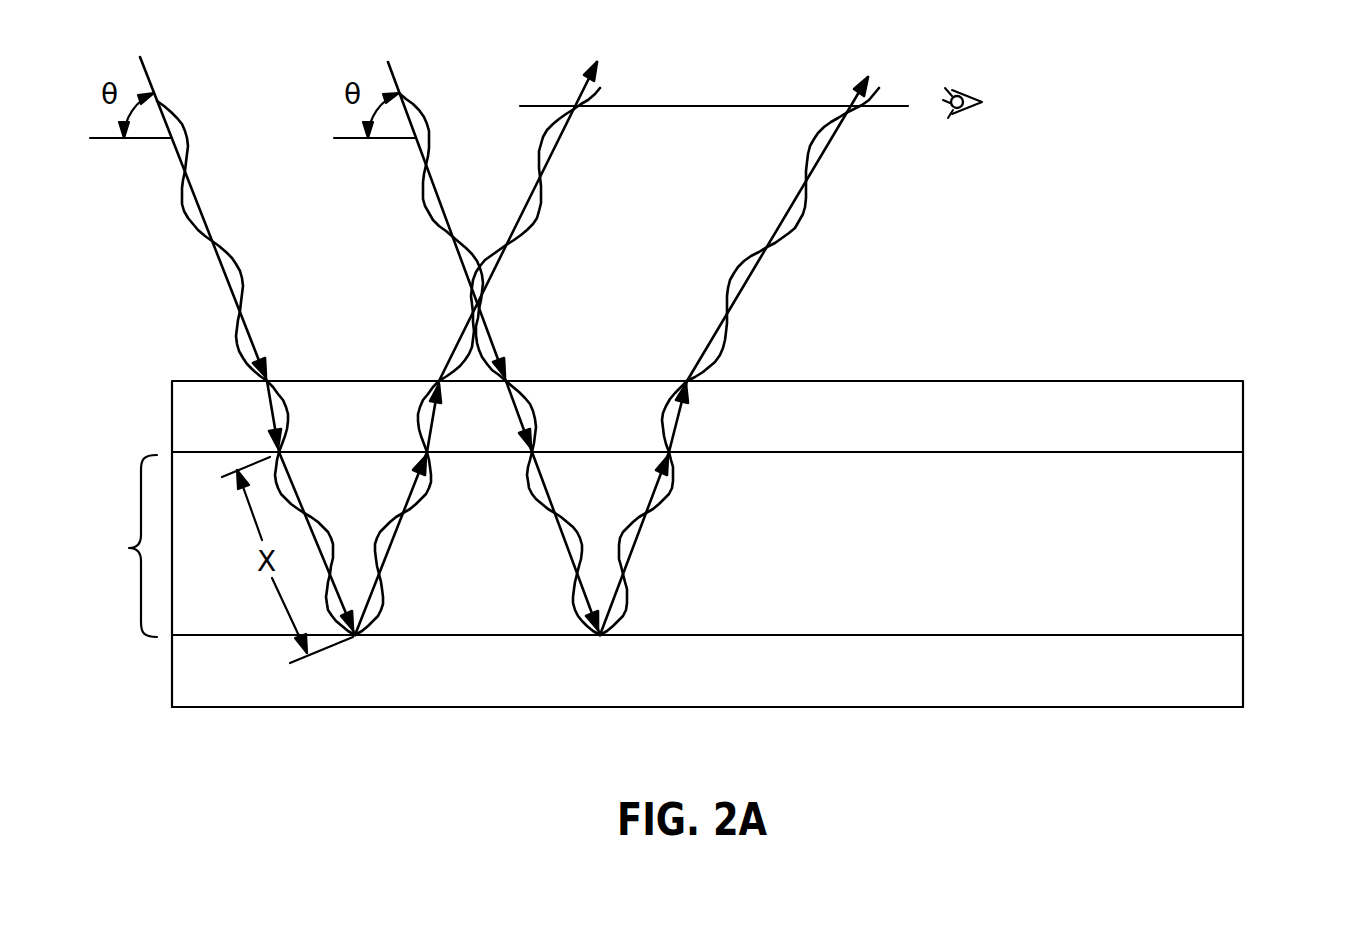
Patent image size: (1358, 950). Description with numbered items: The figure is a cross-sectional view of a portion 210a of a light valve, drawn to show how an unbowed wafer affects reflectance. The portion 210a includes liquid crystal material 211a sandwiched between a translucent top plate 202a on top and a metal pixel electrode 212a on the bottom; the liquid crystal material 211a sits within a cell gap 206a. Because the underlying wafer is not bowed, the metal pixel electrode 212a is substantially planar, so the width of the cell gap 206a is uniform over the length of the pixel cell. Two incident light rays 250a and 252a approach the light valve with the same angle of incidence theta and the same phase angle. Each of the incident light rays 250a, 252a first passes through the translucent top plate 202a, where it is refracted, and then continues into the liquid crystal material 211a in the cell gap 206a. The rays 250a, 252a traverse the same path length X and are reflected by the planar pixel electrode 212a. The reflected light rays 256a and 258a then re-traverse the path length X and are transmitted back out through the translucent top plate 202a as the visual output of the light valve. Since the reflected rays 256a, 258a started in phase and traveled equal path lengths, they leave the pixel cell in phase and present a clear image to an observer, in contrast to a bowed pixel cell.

The portion of a light valve 210a is at (1068, 311).
The translucent top plate 202a is at (1225, 426).
The liquid crystal material 211a is at (1225, 550).
The metal pixel electrode 212a is at (1225, 683).
The cell gap 206a is at (111, 546).
The incident light ray 250a is at (150, 76).
The incident light ray 252a is at (396, 78).
The reflected light ray 256a is at (584, 84).
The reflected light ray 258a is at (852, 100).